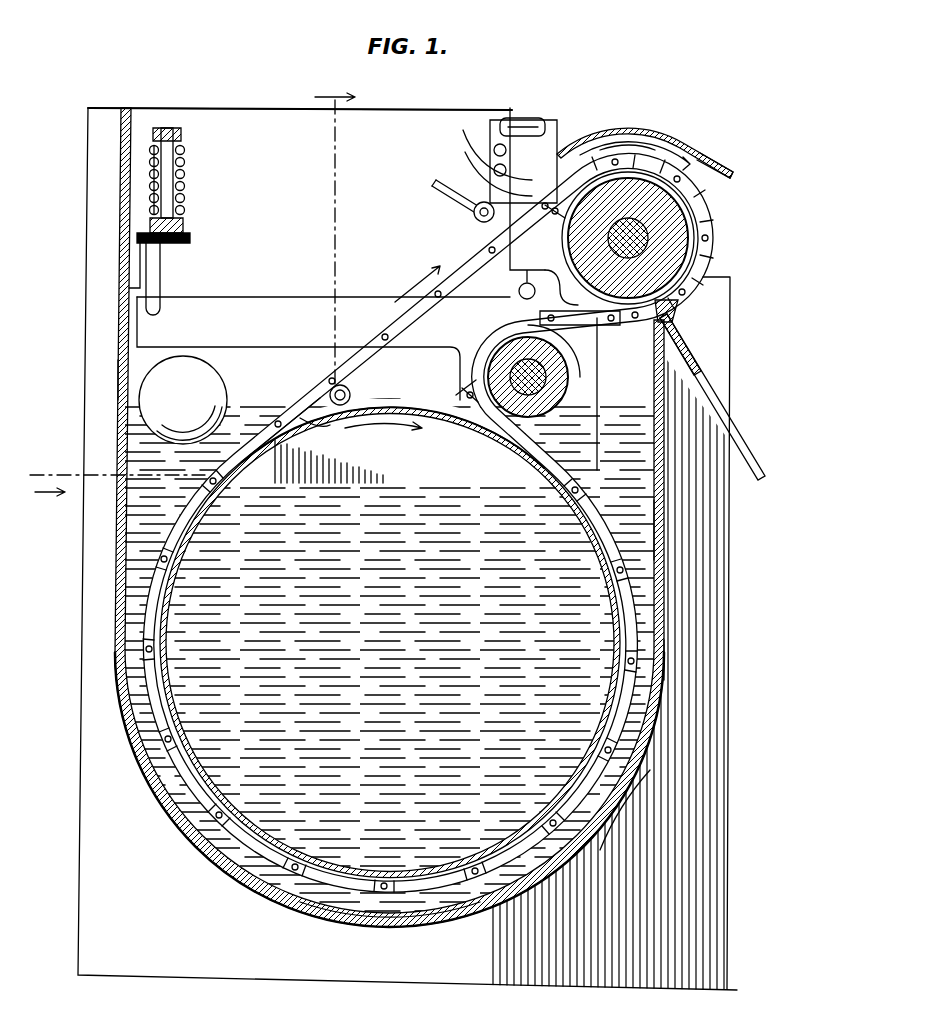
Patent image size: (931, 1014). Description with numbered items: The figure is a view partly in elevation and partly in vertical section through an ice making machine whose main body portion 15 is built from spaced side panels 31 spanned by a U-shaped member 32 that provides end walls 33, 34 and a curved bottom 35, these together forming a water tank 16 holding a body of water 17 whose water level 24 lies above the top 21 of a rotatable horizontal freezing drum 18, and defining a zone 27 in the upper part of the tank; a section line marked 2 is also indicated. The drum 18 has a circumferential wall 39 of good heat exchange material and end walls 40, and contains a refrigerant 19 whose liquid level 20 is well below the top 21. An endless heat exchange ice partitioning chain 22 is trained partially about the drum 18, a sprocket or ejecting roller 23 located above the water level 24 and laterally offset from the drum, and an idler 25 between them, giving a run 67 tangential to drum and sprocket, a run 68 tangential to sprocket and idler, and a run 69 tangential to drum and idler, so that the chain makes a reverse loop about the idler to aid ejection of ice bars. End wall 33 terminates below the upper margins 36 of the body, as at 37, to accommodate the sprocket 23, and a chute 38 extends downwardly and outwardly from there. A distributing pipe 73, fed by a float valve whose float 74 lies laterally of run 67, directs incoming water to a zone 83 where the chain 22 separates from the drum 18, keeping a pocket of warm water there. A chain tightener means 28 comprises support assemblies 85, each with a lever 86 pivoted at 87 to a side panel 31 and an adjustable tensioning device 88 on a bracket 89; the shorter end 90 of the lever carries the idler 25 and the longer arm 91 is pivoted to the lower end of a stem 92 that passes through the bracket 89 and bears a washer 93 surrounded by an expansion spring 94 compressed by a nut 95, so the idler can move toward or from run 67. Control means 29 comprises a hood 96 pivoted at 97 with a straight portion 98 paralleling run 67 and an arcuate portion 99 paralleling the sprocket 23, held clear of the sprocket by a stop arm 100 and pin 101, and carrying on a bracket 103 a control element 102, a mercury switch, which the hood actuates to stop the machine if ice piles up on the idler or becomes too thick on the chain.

The section line 2- 2 is at (192, 285).
The main body portion 15 is at (728, 596).
The water tank 16 is at (666, 660).
The body of water 17 is at (389, 655).
The freezing or heat exchange drum 18 is at (205, 800).
The refrigerant or freezing agent 19 is at (390, 642).
The liquid level 20 is at (408, 483).
The top of the drum 21 is at (405, 406).
The endless heat exchange ice partitioning chain or belt 22 is at (146, 592).
The sprocket or ejecting roller 23 is at (690, 224).
The water level 24 is at (286, 412).
The idler 25 is at (560, 364).
The zone 27 is at (272, 193).
The chain or belt tightener means 28 is at (137, 322).
The control means 29 is at (558, 135).
The side panels 31 is at (722, 850).
The U-shaped member 32 is at (117, 690).
The end wall 33 is at (660, 525).
The end wall 34 is at (118, 380).
The curved bottom 35 is at (305, 917).
The upper margins 36 is at (230, 109).
The upper margin of end wall 37 is at (672, 320).
The slide or chute 38 is at (732, 435).
The circumferential wall 39 is at (665, 762).
The end walls 40 is at (466, 408).
The run 67 is at (470, 264).
The run 68 is at (600, 327).
The run 69 is at (530, 440).
The distributing pipe 73 is at (352, 390).
The float 74 is at (205, 378).
The zone 83 is at (361, 434).
The support assemblies 85 is at (527, 286).
The lever 86 is at (240, 297).
The pivot 87 is at (527, 203).
The adjustable tensioning device 88 is at (185, 186).
The bracket 89 is at (192, 234).
The shorter end of lever 90 is at (600, 377).
The longer arm of lever 91 is at (180, 300).
The stem or rod 92 is at (168, 128).
The washer 93 is at (150, 228).
The expansion spring 94 is at (150, 162).
The nut 95 is at (184, 136).
The hood 96 is at (733, 170).
The pivot 97 is at (476, 218).
The straight portion 98 is at (547, 200).
The arcuate portion 99 is at (638, 132).
The stop arm 100 is at (440, 192).
The pin 101 is at (440, 183).
The control element 102 is at (520, 118).
The bracket 103 is at (585, 132).